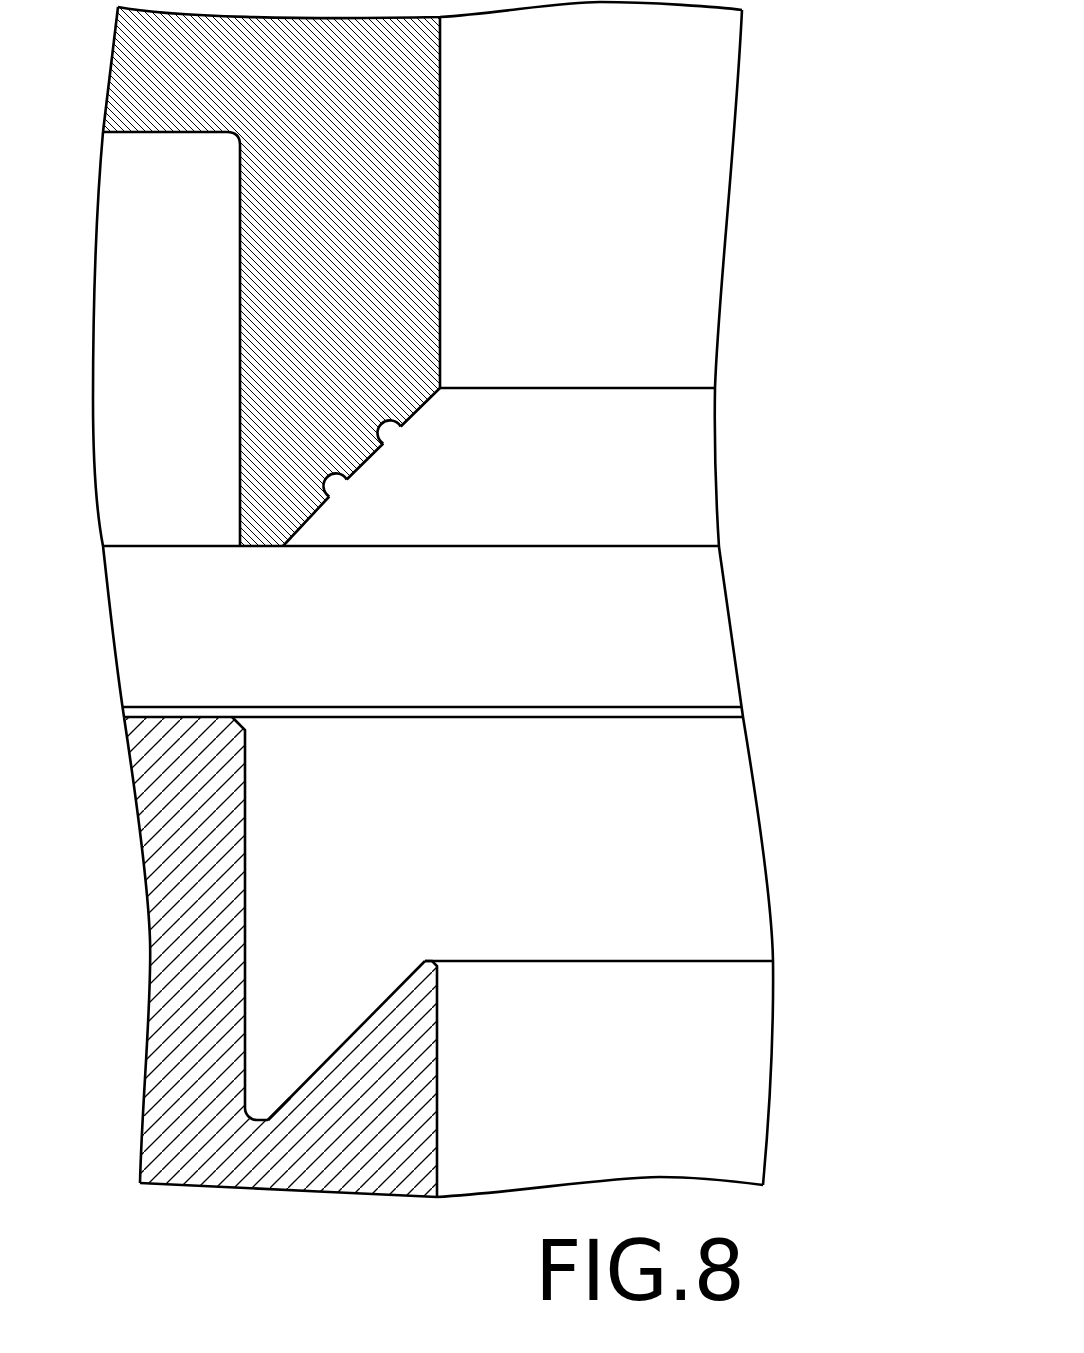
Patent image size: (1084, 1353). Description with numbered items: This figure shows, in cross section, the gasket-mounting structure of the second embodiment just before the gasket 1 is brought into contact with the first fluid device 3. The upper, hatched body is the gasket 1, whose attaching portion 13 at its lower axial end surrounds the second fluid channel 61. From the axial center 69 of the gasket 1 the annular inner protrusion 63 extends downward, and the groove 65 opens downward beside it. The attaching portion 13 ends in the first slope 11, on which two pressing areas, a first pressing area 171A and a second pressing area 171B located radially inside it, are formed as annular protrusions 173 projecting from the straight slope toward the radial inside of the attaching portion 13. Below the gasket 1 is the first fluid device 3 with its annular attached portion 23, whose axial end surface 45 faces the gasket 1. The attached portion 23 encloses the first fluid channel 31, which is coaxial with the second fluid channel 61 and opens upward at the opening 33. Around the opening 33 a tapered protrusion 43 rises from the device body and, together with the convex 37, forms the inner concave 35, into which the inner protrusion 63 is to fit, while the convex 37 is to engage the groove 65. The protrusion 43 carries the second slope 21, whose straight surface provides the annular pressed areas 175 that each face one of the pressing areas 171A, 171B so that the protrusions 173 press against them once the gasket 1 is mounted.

The gasket 1 is at (374, 96).
The axial center 69 is at (173, 113).
The inner protrusion 63 is at (450, 338).
The second fluid channel 61 is at (656, 279).
The first slope 11 is at (378, 463).
The second pressing area 171B is at (405, 439).
The first pressing area 171A is at (334, 504).
The annular protrusion 173 is at (356, 507).
The groove 65 is at (179, 531).
The attaching portion 13 is at (511, 560).
The axial end surface of the attached portion 45 is at (267, 707).
The attached portion 23 is at (685, 689).
The first fluid device 3 is at (217, 1161).
The convex 37 is at (258, 793).
The inner concave 35 is at (284, 975).
The second slope 21 is at (337, 1046).
The pressed area 175 is at (291, 1088).
The protrusion 43 is at (422, 1017).
The opening of the first fluid channel 33 is at (627, 961).
The first fluid channel 31 is at (673, 1104).